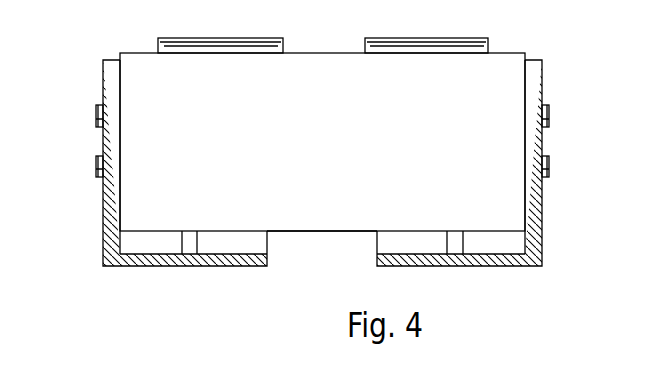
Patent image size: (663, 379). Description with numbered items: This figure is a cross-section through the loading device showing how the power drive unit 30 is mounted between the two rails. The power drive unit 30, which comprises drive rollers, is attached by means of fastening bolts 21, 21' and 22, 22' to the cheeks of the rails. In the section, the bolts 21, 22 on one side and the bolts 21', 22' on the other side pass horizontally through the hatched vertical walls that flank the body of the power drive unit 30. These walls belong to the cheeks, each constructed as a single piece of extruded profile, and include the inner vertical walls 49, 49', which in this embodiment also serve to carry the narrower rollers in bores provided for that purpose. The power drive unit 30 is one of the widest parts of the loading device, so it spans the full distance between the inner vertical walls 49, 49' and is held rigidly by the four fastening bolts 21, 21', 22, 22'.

The fastening bolt 21 is at (74, 107).
The fastening bolt 22 is at (73, 159).
The inner vertical wall 49 is at (162, 163).
The fastening bolt 21' is at (573, 107).
The fastening bolt 22' is at (573, 159).
The inner vertical wall 49' is at (485, 163).
The power drive unit 30 is at (297, 253).